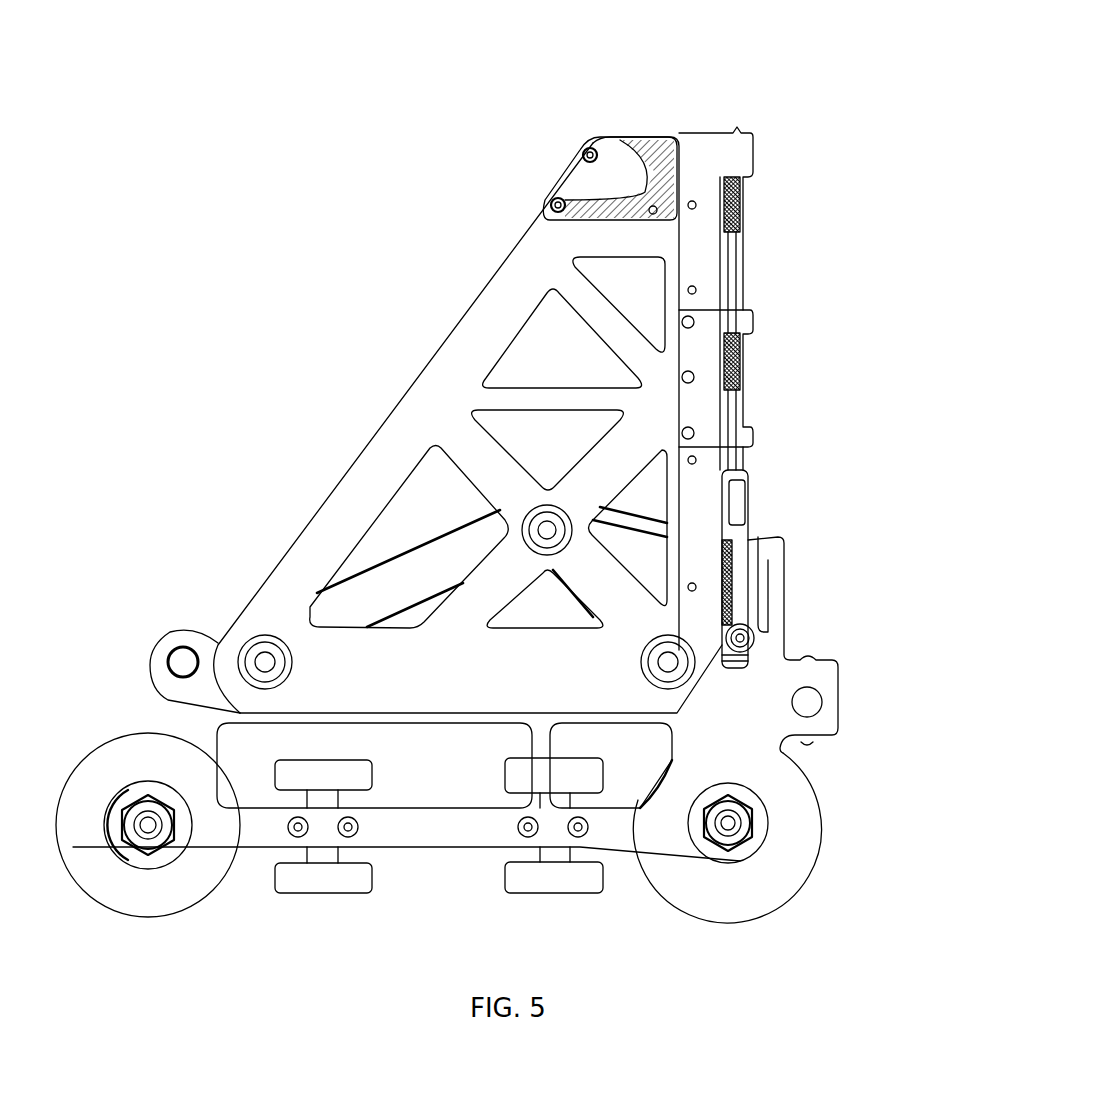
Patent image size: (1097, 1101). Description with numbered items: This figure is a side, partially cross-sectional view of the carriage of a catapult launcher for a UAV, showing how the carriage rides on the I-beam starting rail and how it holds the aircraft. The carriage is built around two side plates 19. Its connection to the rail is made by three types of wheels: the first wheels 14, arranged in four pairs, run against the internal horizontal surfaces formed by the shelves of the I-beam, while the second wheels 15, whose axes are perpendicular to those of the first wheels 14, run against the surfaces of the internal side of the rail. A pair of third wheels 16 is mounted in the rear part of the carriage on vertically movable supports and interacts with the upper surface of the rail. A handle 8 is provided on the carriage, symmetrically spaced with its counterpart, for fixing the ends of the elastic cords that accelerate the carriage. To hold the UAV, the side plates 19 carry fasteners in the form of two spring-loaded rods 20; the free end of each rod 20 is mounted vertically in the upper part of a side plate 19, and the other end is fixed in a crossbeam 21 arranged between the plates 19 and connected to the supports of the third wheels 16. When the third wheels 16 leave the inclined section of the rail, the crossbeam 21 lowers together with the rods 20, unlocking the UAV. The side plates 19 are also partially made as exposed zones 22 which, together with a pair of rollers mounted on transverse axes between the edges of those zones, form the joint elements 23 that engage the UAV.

The handle of the carriage 8 is at (183, 657).
The first wheels of the carriage 14 is at (705, 898).
The second wheels of the carriage 15 is at (517, 780).
The third wheels of the carriage 16 is at (740, 647).
The carriage side plates 19 is at (388, 440).
The rod 20 is at (750, 275).
The crossbeam 21 is at (757, 507).
The exposed zones of the plates of the carriage 22 is at (638, 135).
The joint elements 23 is at (557, 200).